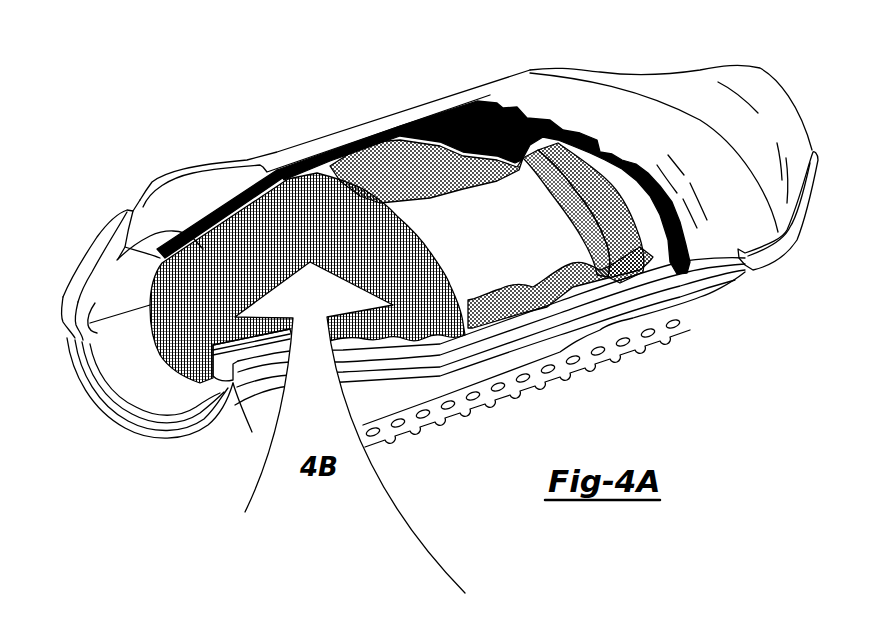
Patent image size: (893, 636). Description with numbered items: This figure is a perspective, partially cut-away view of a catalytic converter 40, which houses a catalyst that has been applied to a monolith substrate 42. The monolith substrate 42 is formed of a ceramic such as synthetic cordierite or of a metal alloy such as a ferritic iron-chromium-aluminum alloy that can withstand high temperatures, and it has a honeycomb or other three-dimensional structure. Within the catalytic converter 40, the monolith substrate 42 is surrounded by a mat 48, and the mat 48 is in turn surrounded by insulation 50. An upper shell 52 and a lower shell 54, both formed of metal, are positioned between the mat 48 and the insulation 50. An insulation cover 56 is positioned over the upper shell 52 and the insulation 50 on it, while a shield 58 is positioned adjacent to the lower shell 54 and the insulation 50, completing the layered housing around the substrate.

The catalytic converter 40 is at (150, 132).
The monolith substrate 42 is at (517, 268).
The mat 48 is at (380, 157).
The insulation 50 is at (473, 103).
The upper shell 52 is at (657, 260).
The lower shell 54 is at (430, 427).
The insulation cover 56 is at (560, 88).
The shield 58 is at (647, 345).